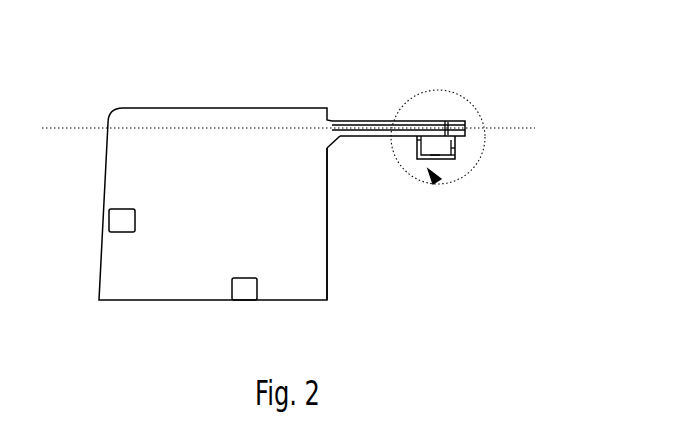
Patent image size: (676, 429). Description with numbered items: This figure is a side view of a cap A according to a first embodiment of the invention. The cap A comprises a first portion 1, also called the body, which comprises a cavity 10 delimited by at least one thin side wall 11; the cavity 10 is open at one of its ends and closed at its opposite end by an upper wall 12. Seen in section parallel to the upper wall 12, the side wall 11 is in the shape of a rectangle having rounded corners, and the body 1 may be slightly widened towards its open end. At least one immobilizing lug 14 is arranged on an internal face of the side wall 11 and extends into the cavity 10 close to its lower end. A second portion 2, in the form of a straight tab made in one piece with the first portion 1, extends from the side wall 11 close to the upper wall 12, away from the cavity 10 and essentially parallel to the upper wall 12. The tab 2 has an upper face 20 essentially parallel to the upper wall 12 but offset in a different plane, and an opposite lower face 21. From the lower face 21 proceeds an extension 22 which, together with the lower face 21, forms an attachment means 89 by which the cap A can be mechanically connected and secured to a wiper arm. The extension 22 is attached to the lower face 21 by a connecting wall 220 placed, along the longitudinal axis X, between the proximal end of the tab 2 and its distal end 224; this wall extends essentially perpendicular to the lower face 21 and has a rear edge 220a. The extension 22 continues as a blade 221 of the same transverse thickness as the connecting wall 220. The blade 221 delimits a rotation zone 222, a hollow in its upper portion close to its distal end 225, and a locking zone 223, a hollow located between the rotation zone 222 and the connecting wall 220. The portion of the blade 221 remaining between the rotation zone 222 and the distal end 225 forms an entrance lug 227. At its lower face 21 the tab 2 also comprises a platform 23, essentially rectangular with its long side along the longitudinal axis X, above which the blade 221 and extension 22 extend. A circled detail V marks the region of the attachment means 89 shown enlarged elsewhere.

The first portion 1 is at (102, 208).
The second portion 2 is at (369, 118).
The cavity 10 is at (185, 304).
The side wall 11 is at (297, 252).
The upper wall 12 is at (233, 108).
The immobilizing lug 14 is at (120, 222).
The upper face 20 is at (378, 121).
The lower face 21 is at (358, 137).
The extension 22 is at (439, 183).
The platform 23 is at (445, 160).
The attachment means 89 is at (433, 186).
The connecting wall 220 is at (412, 150).
The rear edge 220a is at (385, 137).
The blade 221 is at (420, 152).
The rotation zone 222 is at (448, 121).
The locking zone 223 is at (428, 121).
The distal end 224 is at (468, 121).
The distal end 225 is at (466, 137).
The entrance lug 227 is at (456, 160).
The cap A is at (99, 115).
The longitudinal axis X is at (288, 140).
The detail V is at (410, 97).